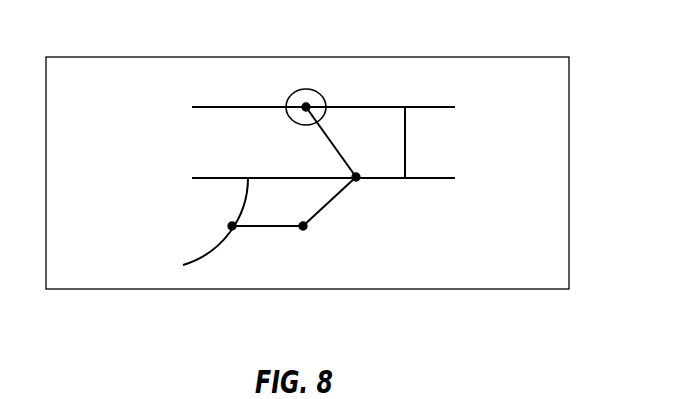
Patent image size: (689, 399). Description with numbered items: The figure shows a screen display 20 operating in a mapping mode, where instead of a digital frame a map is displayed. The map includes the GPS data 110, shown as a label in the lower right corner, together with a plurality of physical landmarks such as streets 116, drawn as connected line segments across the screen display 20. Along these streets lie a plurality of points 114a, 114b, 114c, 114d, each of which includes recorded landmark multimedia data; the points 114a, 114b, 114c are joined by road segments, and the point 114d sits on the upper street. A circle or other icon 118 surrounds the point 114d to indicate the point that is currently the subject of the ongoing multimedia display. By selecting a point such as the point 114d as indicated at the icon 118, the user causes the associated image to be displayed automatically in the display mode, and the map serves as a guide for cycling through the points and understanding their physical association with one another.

The screen display 20 is at (339, 173).
The GPS data 110 is at (544, 253).
The point 114a is at (277, 255).
The point 114b is at (344, 245).
The point 114c is at (397, 196).
The point 114d is at (262, 87).
The streets 116 is at (466, 99).
The circle or other icon 118 is at (344, 70).